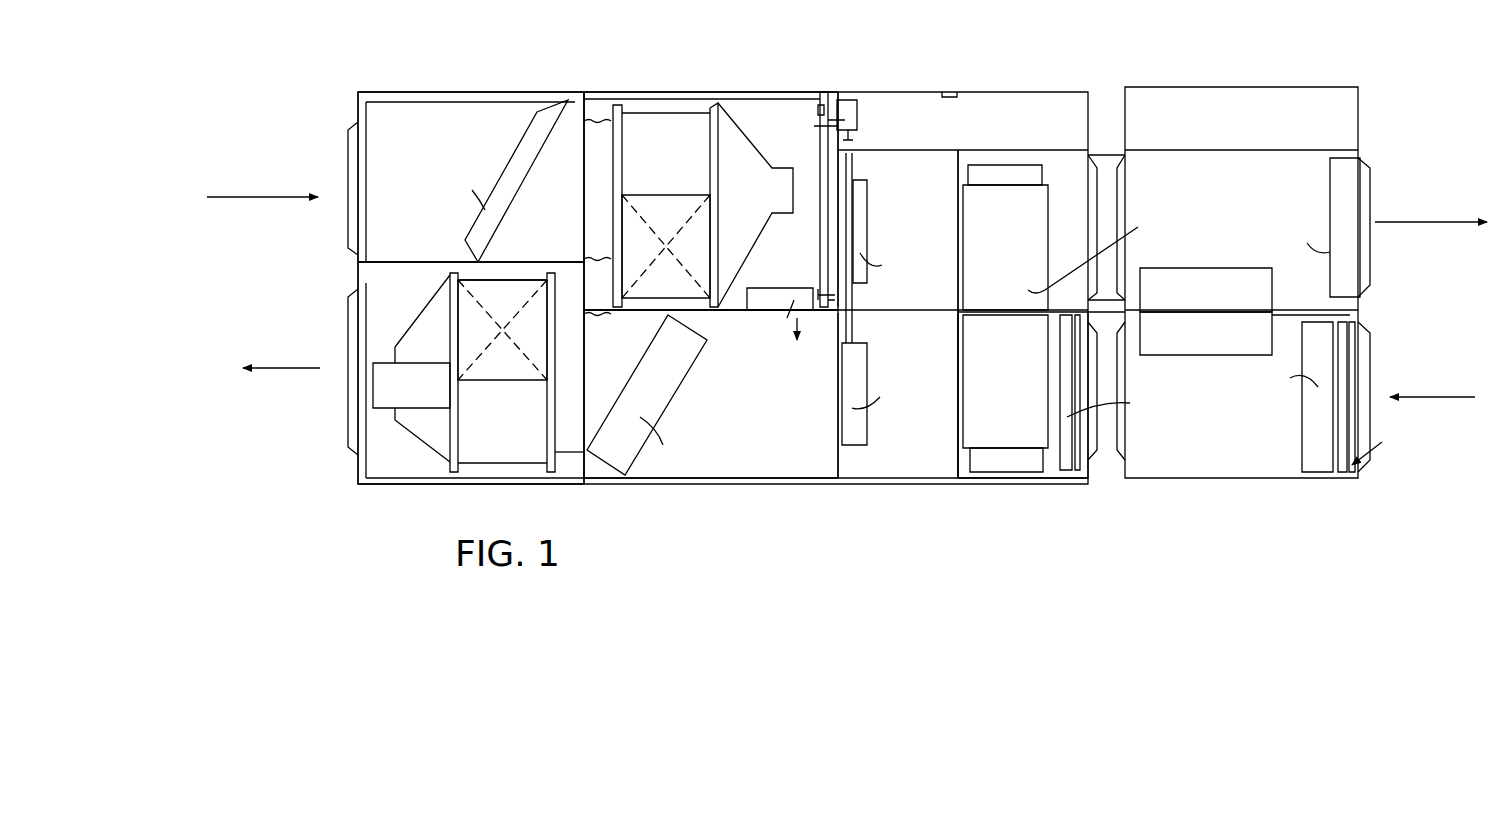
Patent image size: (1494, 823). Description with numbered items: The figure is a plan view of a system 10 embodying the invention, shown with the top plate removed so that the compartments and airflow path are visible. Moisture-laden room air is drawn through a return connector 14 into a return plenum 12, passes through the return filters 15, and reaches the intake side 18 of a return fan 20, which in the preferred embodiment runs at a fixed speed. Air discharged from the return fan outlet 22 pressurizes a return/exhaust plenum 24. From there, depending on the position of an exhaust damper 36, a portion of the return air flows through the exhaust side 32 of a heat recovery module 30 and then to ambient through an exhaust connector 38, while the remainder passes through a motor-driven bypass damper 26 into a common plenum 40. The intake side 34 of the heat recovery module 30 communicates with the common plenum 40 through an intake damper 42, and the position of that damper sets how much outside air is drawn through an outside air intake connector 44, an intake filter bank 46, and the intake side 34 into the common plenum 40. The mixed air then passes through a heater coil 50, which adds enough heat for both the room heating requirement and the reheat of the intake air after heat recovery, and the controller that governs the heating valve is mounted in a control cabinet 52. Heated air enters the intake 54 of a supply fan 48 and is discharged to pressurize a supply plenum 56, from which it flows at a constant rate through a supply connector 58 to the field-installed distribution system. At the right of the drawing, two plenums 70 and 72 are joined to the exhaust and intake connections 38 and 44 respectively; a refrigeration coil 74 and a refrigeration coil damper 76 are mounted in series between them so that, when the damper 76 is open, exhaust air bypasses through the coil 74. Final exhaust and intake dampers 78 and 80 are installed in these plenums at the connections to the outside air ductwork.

The system 10 is at (800, 66).
The return plenum 12 is at (420, 158).
The return connector 14 is at (345, 171).
The return filters 15 is at (493, 176).
The intake side of return fan 18 is at (594, 206).
The return fan 20 is at (639, 110).
The return fan outlet 22 is at (696, 231).
The return/exhaust plenum 24 is at (783, 241).
The bypass damper 26 is at (737, 380).
The heat recovery module 30 is at (960, 276).
The exhaust side of heat recovery module 32 is at (1024, 230).
The intake side of heat recovery module 34 is at (1008, 409).
The exhaust damper 36 is at (870, 208).
The exhaust connector 38 is at (1100, 167).
The common plenum 40 is at (813, 432).
The intake damper 42 is at (855, 447).
The outside air intake connector 44 is at (1100, 439).
The intake filter bank 46 is at (1072, 474).
The supply fan 48 is at (483, 445).
The heater coil 50 is at (640, 459).
The control cabinet 52 is at (845, 99).
The intake of supply fan 54 is at (566, 425).
The supply plenum 56 is at (385, 312).
The supply connector 58 is at (347, 422).
The plenum 70 is at (1239, 188).
The plenum 72 is at (1278, 435).
The refrigeration coil 74 is at (1208, 360).
The refrigeration coil damper 76 is at (1230, 265).
The final exhaust damper 78 is at (1338, 156).
The final intake damper 80 is at (1358, 472).